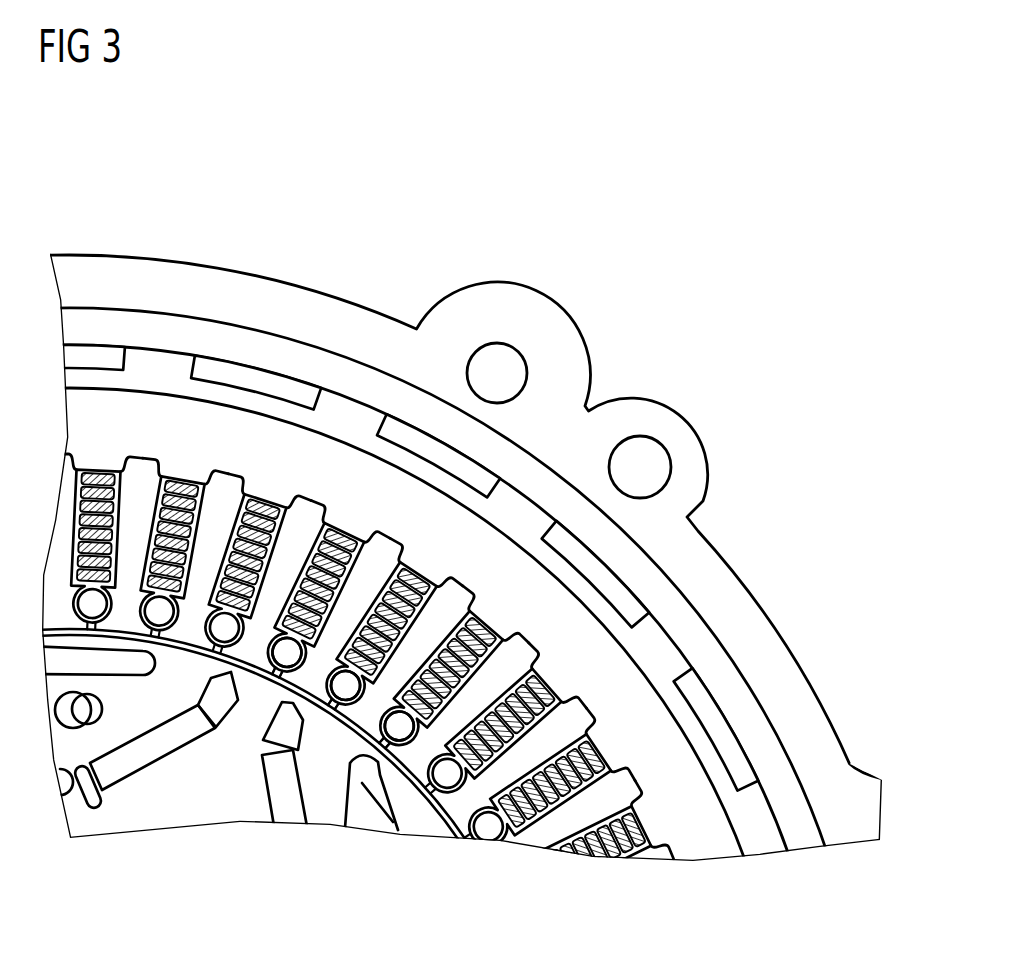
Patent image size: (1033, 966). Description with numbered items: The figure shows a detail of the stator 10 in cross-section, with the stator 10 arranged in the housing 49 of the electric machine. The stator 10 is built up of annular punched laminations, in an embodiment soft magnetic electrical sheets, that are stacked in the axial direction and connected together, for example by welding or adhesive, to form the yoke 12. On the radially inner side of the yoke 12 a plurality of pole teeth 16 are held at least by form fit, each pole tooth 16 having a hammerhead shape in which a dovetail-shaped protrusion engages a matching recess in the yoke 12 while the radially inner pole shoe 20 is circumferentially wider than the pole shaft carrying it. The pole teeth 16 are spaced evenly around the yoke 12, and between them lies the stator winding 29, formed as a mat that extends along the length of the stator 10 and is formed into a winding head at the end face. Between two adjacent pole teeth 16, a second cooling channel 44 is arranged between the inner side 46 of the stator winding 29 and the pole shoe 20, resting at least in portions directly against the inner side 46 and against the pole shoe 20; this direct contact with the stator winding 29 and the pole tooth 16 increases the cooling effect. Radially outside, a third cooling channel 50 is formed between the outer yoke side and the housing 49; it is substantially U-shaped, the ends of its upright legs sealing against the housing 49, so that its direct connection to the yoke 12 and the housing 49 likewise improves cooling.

The stator 10 is at (744, 142).
The yoke 12 is at (163, 420).
The pole tooth 16 is at (295, 533).
The pole shoe 20 is at (455, 808).
The stator winding 29 is at (188, 513).
The second cooling channel 44 is at (270, 658).
The inner side of the stator winding 46 is at (478, 833).
The housing 49 is at (618, 547).
The third cooling channel 50 is at (660, 665).